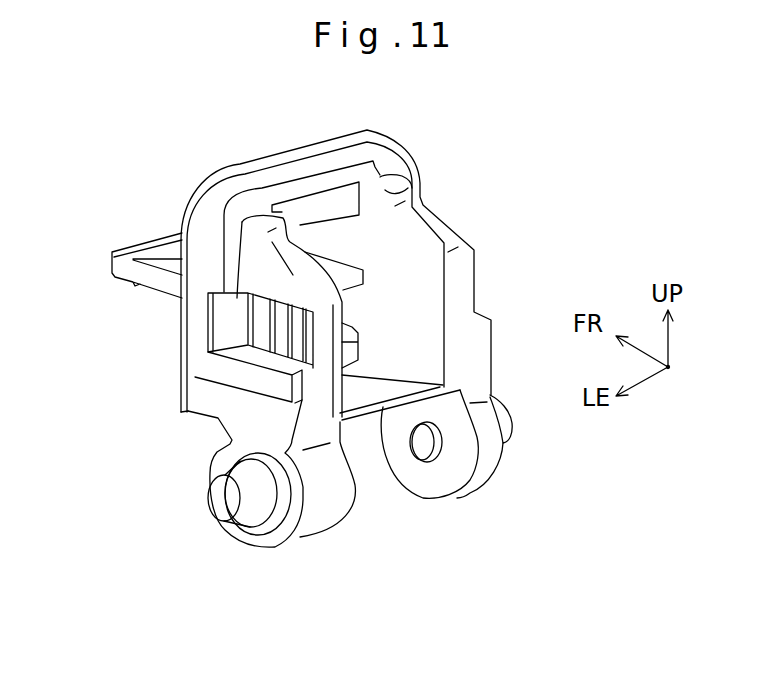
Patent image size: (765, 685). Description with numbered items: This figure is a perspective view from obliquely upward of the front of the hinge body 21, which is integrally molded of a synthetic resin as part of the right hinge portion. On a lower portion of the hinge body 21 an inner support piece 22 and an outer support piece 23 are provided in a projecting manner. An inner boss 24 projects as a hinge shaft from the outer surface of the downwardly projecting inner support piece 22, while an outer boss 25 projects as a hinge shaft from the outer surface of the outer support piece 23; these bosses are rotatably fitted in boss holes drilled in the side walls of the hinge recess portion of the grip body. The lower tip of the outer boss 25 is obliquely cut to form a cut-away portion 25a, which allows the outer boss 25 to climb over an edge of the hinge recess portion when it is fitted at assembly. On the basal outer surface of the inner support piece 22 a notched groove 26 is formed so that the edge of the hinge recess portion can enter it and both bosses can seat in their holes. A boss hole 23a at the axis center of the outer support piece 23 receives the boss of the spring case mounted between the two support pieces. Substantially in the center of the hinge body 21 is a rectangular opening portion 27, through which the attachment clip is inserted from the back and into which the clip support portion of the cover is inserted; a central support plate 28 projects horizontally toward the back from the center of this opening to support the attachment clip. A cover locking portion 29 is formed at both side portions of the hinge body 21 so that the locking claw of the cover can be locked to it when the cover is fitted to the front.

The hinge body 21 is at (452, 233).
The inner support piece 22 is at (318, 515).
The outer support piece 23 is at (428, 482).
The boss hole 23a is at (422, 466).
The inner boss 24 is at (222, 502).
The outer boss 25 is at (512, 423).
The cut-away portion 25a is at (503, 443).
The notched groove 26 is at (235, 400).
The rectangular opening portion 27 is at (348, 237).
The central support plate 28 is at (163, 260).
The cover locking portion 29 is at (248, 317).